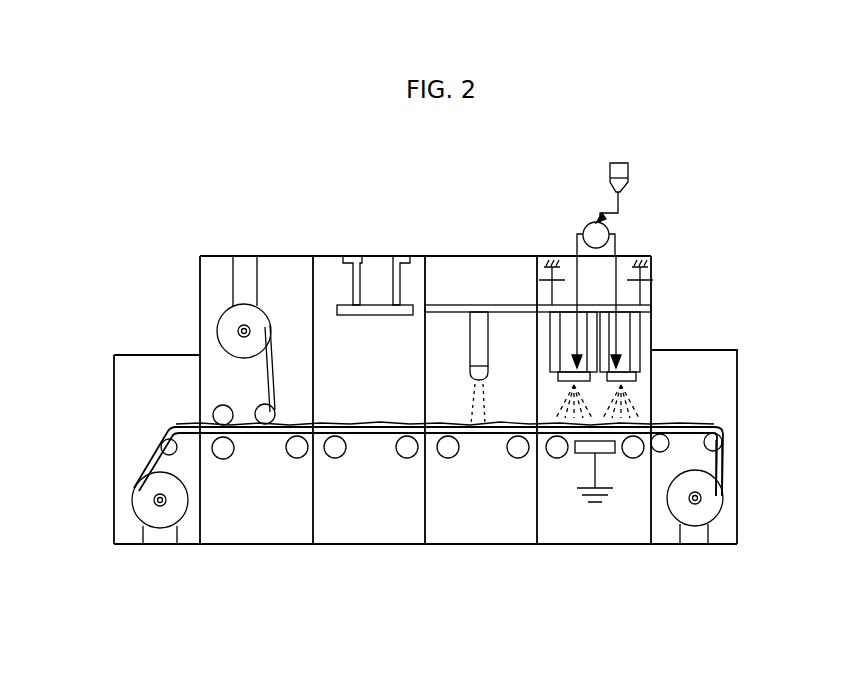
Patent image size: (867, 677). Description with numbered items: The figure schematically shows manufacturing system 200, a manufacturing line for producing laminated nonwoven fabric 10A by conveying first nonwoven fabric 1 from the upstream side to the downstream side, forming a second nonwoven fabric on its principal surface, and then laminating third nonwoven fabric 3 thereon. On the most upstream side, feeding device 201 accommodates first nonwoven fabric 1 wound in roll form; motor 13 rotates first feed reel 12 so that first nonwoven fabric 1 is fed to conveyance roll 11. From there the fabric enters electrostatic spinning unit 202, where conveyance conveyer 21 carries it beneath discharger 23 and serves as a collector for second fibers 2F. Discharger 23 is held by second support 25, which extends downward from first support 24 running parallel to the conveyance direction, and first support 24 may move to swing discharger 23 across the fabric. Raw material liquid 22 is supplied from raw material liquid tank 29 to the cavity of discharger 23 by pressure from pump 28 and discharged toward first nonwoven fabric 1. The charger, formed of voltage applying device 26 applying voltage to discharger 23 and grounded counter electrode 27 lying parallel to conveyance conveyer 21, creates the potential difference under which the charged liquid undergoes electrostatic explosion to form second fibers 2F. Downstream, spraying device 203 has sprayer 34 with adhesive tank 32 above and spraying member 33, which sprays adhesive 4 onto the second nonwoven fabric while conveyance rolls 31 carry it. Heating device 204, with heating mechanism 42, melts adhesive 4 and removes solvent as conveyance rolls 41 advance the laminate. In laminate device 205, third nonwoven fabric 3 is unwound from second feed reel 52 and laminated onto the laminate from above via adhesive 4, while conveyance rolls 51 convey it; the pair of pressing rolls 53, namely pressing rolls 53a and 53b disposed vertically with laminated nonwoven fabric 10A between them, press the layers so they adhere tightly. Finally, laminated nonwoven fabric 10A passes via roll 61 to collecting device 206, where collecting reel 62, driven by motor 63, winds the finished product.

The manufacturing system 200 is at (197, 234).
The first nonwoven fabric feeding device 201 is at (652, 562).
The electrostatic spinning unit 202 is at (645, 580).
The adhesive spraying device 203 is at (427, 580).
The heating device 204 is at (312, 580).
The third nonwoven fabric laminate device 205 is at (200, 580).
The collecting device 206 is at (197, 562).
The first nonwoven fabric 1 is at (723, 467).
The second fibers 2F is at (632, 402).
The third nonwoven fabric 3 is at (274, 362).
The adhesive 4 is at (472, 404).
The laminated nonwoven fabric 10A is at (152, 455).
The conveyance roll 11 is at (723, 442).
The first feed reel 12 is at (710, 503).
The motor 13 is at (700, 533).
The conveyance conveyer 21 is at (571, 458).
The raw material liquid 22 is at (630, 183).
The discharger 23 is at (652, 372).
The first support 24 is at (650, 304).
The second support 25 is at (636, 336).
The voltage applying device 26 is at (650, 290).
The counter electrode 27 is at (606, 453).
The pump 28 is at (612, 224).
The raw material liquid tank 29 is at (620, 162).
The conveyance roll 31 is at (514, 456).
The adhesive tank 32 is at (477, 326).
The spraying member 33 is at (484, 374).
The sprayer 34 is at (480, 282).
The conveyance roll 41 is at (404, 456).
The heating mechanism 42 is at (346, 302).
The conveyance roll 51 is at (294, 457).
The second feed reel 52 is at (229, 320).
The pair of pressing rolls 53 is at (176, 373).
The pressing roll 53a is at (222, 410).
The pressing roll 53b is at (222, 440).
The roll 61 is at (161, 441).
The collecting reel 62 is at (146, 496).
The motor 63 is at (156, 537).